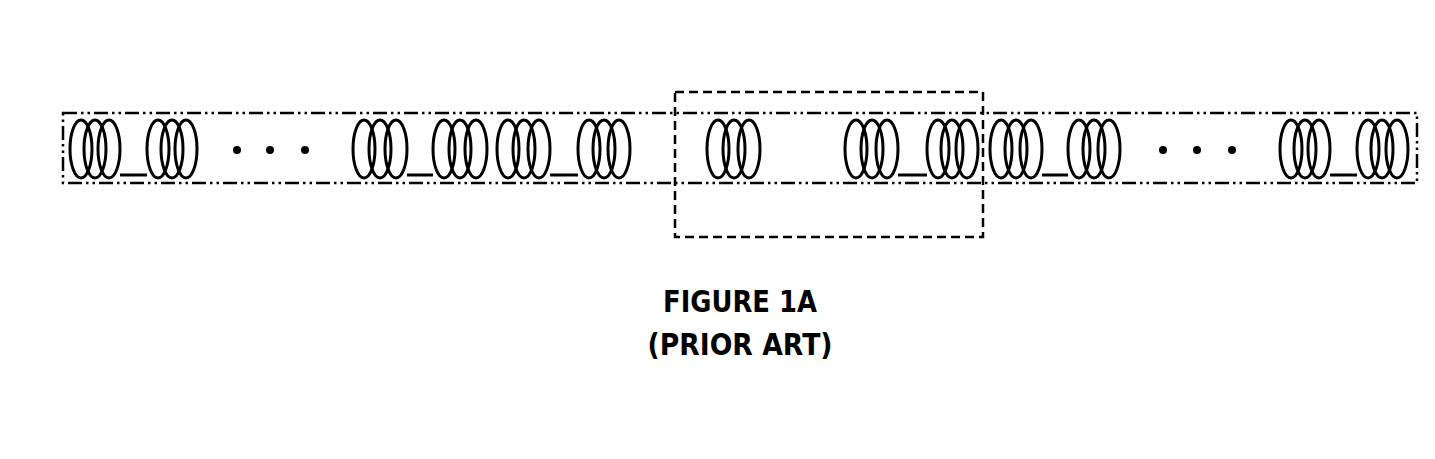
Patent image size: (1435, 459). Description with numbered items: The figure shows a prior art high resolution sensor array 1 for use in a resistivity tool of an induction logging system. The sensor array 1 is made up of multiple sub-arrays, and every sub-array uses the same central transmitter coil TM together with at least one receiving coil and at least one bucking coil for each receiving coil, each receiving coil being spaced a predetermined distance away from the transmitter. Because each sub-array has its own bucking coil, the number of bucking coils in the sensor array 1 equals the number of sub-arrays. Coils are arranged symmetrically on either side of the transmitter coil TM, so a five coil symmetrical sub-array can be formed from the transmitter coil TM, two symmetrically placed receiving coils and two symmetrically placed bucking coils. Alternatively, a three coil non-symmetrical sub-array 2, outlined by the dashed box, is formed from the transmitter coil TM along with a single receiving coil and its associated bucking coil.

The high resolution sensor array 1 is at (236, 85).
The three coil non-symmetrical sub-array 2 is at (983, 237).
The transmitter coil TM is at (736, 176).